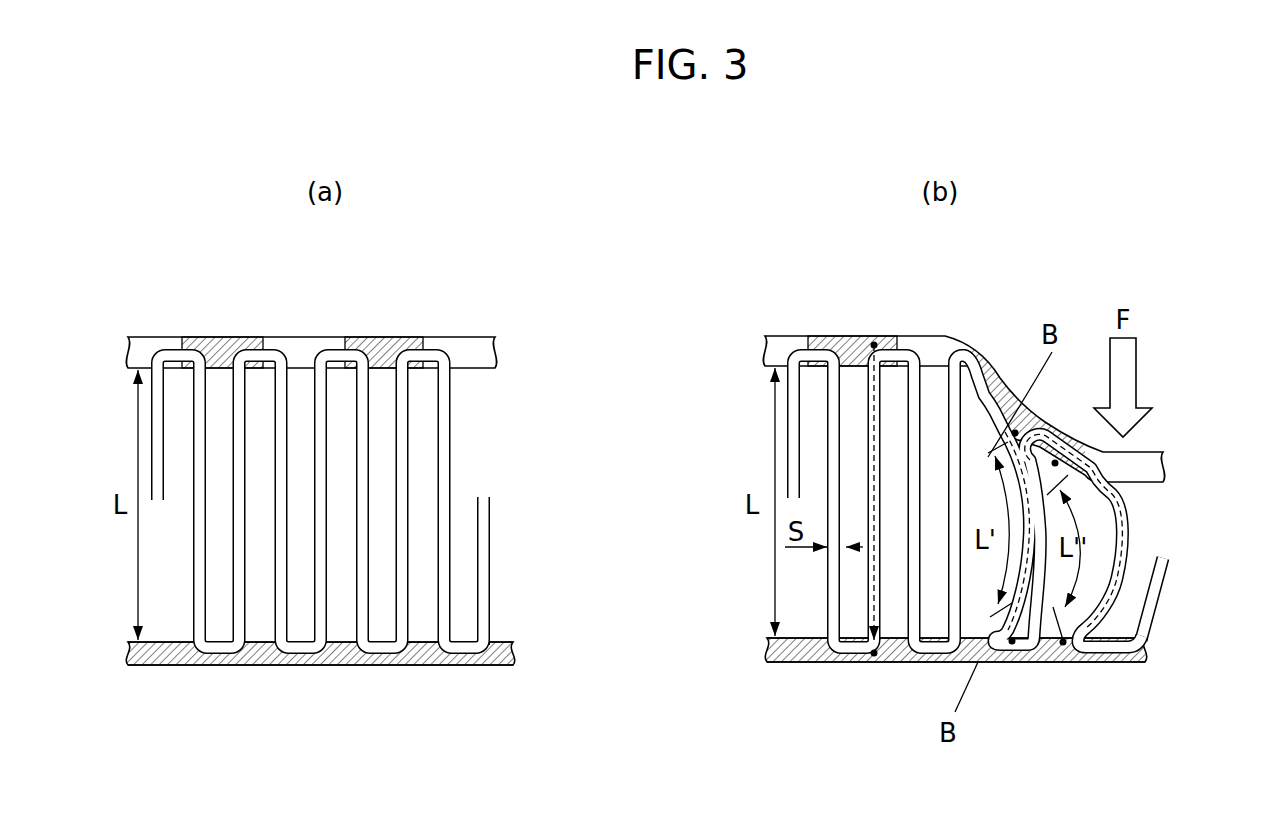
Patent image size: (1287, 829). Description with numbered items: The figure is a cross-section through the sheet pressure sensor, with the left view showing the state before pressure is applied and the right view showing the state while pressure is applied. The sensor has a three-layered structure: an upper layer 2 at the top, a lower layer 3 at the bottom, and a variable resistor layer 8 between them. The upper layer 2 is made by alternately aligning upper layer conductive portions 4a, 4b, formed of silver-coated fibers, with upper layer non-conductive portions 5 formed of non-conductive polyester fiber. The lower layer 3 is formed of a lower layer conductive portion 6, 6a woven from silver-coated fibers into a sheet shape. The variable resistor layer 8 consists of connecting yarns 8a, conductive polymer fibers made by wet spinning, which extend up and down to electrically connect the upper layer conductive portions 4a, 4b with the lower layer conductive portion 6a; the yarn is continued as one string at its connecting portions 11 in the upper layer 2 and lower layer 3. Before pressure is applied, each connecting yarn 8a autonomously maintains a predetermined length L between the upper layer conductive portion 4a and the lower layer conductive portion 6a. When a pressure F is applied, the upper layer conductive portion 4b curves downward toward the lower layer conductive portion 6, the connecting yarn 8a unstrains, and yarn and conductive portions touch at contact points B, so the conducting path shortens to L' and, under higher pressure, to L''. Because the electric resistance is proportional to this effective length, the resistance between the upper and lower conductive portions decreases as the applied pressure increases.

The upper layer 2 is at (506, 344).
The lower layer 3 is at (535, 646).
The upper layer conductive portion 4a is at (223, 342).
The upper layer conductive portion 4b is at (398, 340).
The upper layer non-conductive portion 5 is at (295, 347).
The lower layer conductive portion 6 is at (636, 663).
The lower layer conductive portion 6a is at (510, 636).
The variable resistor layer 8 is at (468, 446).
The connecting yarn 8a is at (487, 533).
The connecting portion 11 is at (177, 355).